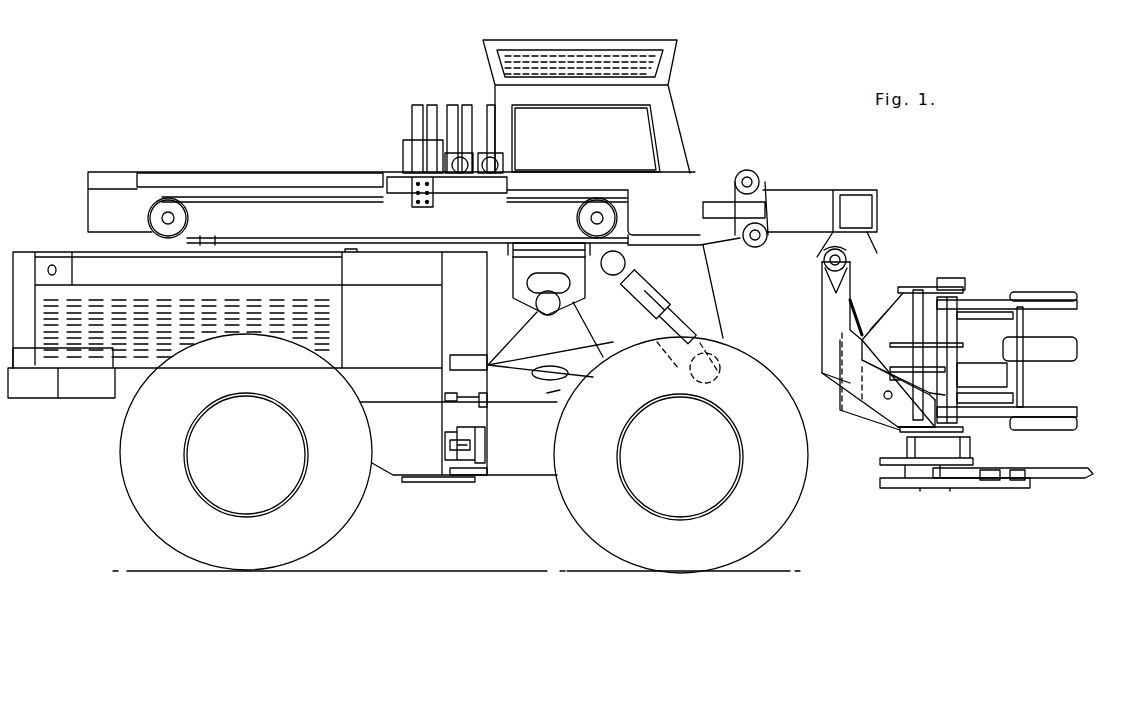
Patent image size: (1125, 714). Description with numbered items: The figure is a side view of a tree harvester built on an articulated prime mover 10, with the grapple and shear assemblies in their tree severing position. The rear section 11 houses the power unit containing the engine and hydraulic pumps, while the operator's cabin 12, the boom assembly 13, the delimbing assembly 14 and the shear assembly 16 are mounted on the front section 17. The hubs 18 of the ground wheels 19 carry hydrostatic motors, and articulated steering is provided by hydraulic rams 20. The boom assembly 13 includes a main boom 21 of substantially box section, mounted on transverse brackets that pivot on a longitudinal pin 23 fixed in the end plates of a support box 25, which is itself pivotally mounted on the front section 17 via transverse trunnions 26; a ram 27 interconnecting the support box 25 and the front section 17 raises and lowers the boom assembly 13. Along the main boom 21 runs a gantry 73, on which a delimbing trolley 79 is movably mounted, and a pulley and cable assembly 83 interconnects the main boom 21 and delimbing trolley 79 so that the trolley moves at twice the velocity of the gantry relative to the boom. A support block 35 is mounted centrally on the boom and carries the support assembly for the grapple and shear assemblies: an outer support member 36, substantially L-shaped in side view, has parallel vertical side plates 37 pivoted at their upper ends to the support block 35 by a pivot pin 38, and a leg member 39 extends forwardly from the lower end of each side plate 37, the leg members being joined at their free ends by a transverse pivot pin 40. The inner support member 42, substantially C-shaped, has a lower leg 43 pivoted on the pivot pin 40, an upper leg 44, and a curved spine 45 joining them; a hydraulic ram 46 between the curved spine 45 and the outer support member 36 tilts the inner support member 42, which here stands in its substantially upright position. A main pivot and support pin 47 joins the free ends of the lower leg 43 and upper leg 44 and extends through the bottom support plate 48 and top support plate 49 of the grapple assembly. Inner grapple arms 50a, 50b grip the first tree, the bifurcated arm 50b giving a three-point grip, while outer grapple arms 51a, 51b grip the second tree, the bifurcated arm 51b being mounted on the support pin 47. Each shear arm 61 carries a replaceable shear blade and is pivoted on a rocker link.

The articulated prime mover 10 is at (258, 135).
The rear section 11 is at (68, 400).
The operator's cabin 12 is at (682, 143).
The boom assembly 13 is at (788, 168).
The delimbing assembly 14 is at (395, 135).
The shear assembly 16 is at (1068, 490).
The front section 17 is at (523, 475).
The hub 18 is at (248, 442).
The ground wheel 19 is at (345, 511).
The hydraulic ram 20 is at (445, 440).
The main boom 21 is at (702, 185).
The longitudinal pin 23 is at (512, 253).
The support box 25 is at (510, 280).
The transverse trunnion 26 is at (538, 303).
The ram 27 is at (687, 317).
The support block 35 is at (873, 243).
The outer support member 36 is at (822, 330).
The side plate 37 is at (822, 292).
The pivot pin 38 is at (830, 258).
The leg member 39 is at (833, 383).
The transverse pivot pin 40 is at (885, 397).
The inner support member 42 is at (878, 437).
The lower leg 43 is at (898, 443).
The upper leg 44 is at (965, 282).
The curved spine 45 is at (900, 293).
The hydraulic ram 46 is at (858, 310).
The main pivot and support pin 47 is at (950, 390).
The bottom support plate 48 is at (963, 440).
The top support plate 49 is at (968, 290).
The inner grapple arm 50a is at (1007, 375).
The inner grapple arm 50b is at (1013, 316).
The outer grapple arm 51a is at (1077, 349).
The outer grapple arm 51b is at (1075, 300).
The shear arm 61 is at (1085, 472).
The gantry 73 is at (245, 172).
The delimbing trolley 79 is at (392, 170).
The pulley and cable assembly 83 is at (195, 197).